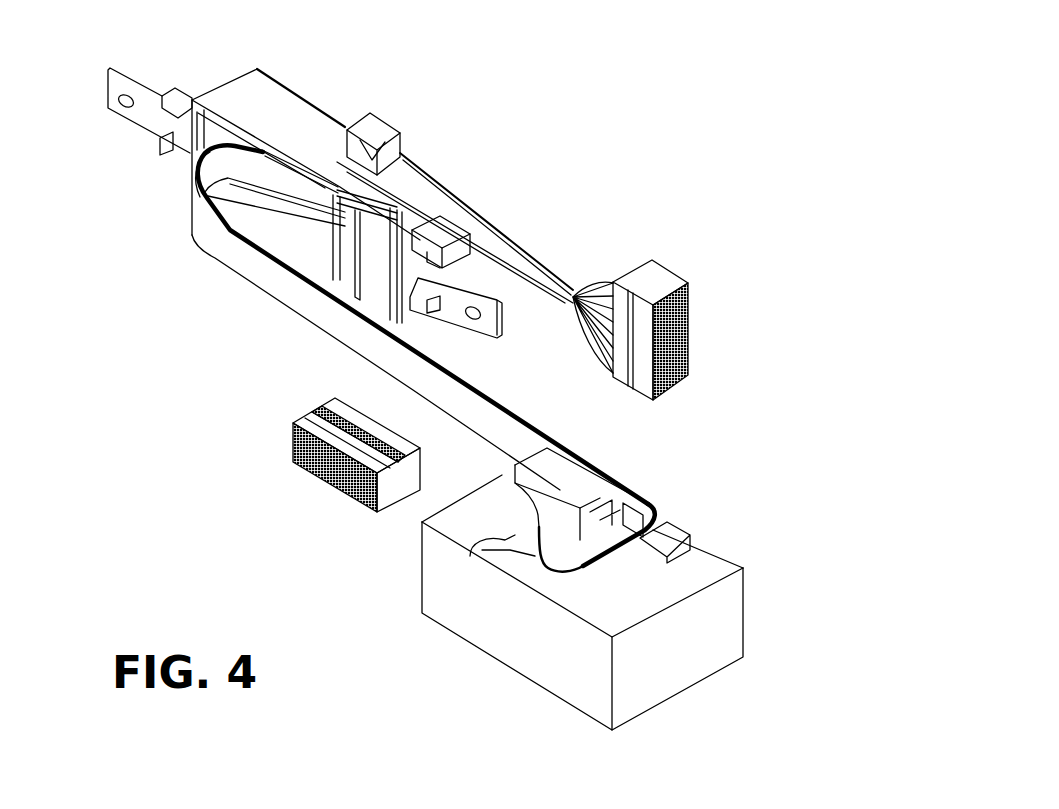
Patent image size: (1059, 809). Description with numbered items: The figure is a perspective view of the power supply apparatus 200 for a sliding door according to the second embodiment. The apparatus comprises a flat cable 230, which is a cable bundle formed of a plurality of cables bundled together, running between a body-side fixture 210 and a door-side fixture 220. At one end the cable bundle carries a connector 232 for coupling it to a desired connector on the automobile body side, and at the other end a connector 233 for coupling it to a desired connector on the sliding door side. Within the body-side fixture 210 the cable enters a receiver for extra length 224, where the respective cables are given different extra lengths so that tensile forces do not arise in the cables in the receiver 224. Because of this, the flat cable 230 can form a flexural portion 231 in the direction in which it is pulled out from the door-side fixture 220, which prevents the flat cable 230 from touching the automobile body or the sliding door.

The power supply apparatus for a sliding door 200 is at (584, 72).
The body-side fixture 210 is at (460, 656).
The door-side fixture 220 is at (304, 77).
The receiver for extra length 224 is at (500, 540).
The flat cable 230 is at (490, 220).
The flexural portion 231 is at (192, 202).
The connector 232 is at (296, 437).
The connector 233 is at (685, 333).